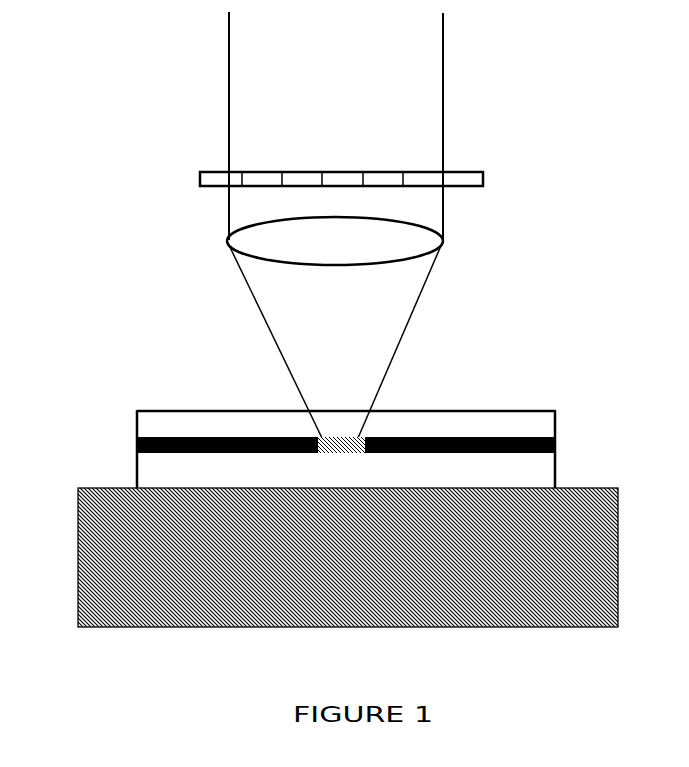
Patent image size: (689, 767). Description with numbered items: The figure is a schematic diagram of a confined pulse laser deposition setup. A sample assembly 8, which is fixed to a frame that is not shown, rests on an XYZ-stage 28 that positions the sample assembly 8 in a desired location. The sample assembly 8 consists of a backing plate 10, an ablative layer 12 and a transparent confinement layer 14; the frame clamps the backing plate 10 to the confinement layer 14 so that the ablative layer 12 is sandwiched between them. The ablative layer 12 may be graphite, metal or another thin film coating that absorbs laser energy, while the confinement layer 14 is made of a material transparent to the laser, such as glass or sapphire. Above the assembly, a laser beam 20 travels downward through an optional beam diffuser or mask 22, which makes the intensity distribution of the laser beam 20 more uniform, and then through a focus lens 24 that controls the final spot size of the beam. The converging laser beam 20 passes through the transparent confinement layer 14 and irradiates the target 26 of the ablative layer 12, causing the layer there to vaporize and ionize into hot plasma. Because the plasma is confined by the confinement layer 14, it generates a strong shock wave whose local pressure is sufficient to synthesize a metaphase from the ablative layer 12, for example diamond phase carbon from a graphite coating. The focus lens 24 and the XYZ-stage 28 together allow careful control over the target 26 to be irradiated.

The sample assembly 8 is at (586, 404).
The backing plate 10 is at (135, 467).
The ablative layer 12 is at (137, 440).
The transparent confinement layer 14 is at (160, 406).
The laser beam 20 is at (236, 56).
The beam diffuser or mask 22 is at (203, 173).
The focus lens 24 is at (443, 240).
The target 26 is at (360, 437).
The XYZ-stage 28 is at (80, 543).